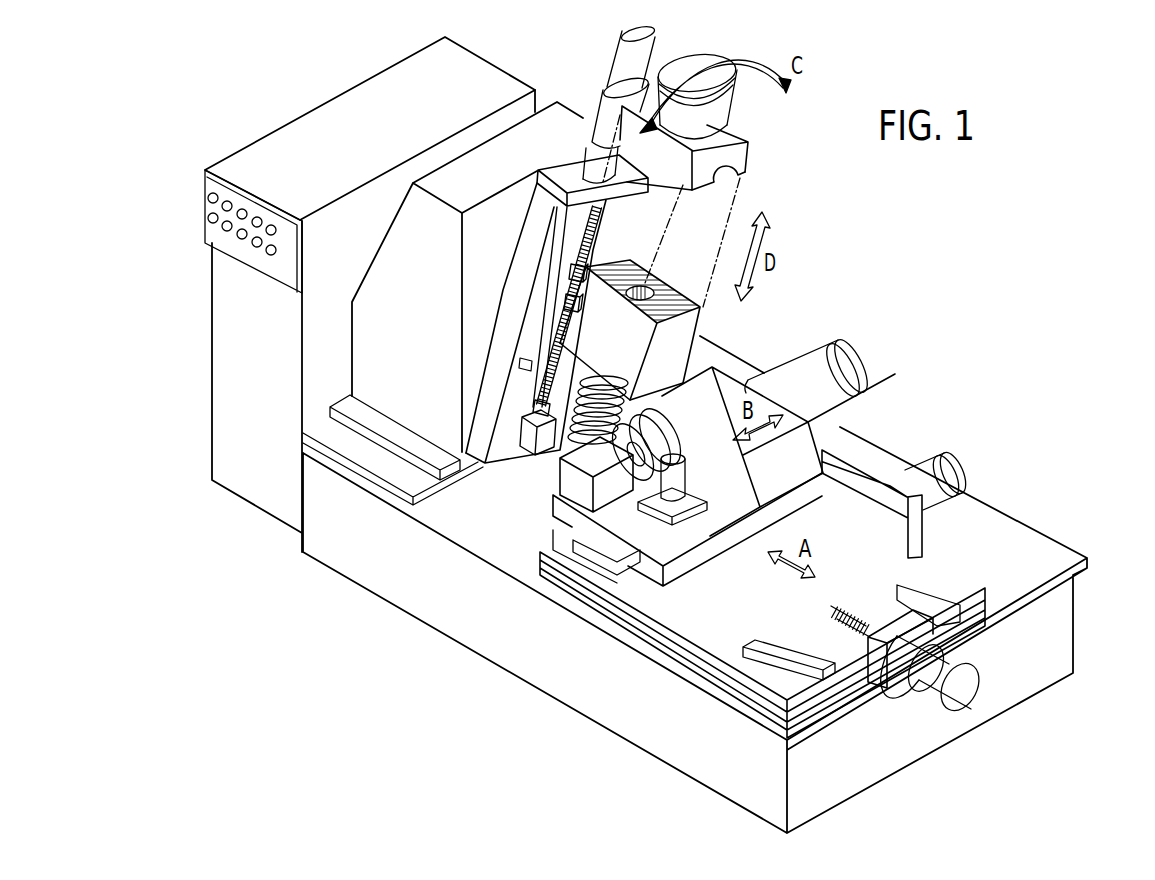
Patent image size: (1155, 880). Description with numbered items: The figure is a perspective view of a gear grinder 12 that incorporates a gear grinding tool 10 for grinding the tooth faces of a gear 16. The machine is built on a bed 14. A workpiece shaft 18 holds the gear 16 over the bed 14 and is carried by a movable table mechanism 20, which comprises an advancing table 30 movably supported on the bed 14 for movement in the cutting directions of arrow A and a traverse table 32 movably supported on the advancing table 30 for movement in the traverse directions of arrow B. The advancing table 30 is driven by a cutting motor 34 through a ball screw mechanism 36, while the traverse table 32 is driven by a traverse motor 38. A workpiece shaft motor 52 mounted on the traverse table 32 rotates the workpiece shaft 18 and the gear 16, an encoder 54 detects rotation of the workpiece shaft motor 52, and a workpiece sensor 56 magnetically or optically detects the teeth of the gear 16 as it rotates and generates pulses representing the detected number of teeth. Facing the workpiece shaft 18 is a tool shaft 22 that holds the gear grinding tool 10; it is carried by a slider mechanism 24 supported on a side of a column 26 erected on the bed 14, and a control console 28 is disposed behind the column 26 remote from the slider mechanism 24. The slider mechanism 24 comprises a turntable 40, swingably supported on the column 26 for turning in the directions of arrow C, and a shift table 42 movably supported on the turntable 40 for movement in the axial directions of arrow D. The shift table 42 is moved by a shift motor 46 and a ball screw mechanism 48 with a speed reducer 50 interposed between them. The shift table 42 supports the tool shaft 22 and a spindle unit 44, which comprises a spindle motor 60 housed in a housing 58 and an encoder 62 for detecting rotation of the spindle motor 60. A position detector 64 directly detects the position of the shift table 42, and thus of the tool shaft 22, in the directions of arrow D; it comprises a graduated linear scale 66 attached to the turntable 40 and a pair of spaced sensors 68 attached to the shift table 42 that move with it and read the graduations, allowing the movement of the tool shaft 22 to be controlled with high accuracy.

The gear grinding tool 10 is at (545, 392).
The gear grinder 12 is at (1016, 235).
The bed 14 is at (1052, 625).
The gear 16 is at (660, 417).
The workpiece shaft 18 is at (560, 472).
The movable table mechanism 20 is at (856, 433).
The tool shaft 22 is at (650, 287).
The slider mechanism 24 is at (473, 330).
The column 26 is at (390, 246).
The control console 28 is at (248, 485).
The advancing table 30 is at (722, 623).
The traverse table 32 is at (694, 528).
The cutting motor 34 is at (921, 668).
The ball screw mechanism 36 is at (850, 640).
The traverse motor 38 is at (942, 470).
The turntable 40 is at (526, 231).
The shift table 42 is at (598, 250).
The spindle unit 44 is at (785, 111).
The shift motor 46 is at (627, 43).
The ball screw mechanism 48 is at (603, 213).
The speed reducer 50 is at (602, 115).
The workpiece shaft motor 52 is at (792, 368).
The encoder 54 is at (850, 350).
The workpiece sensor 56 is at (688, 470).
The housing 58 is at (727, 133).
The spindle motor 60 is at (740, 175).
The encoder 62 is at (684, 62).
The position detector 64 is at (586, 325).
The linear scale 66 is at (562, 306).
The sensors 68 is at (570, 275).